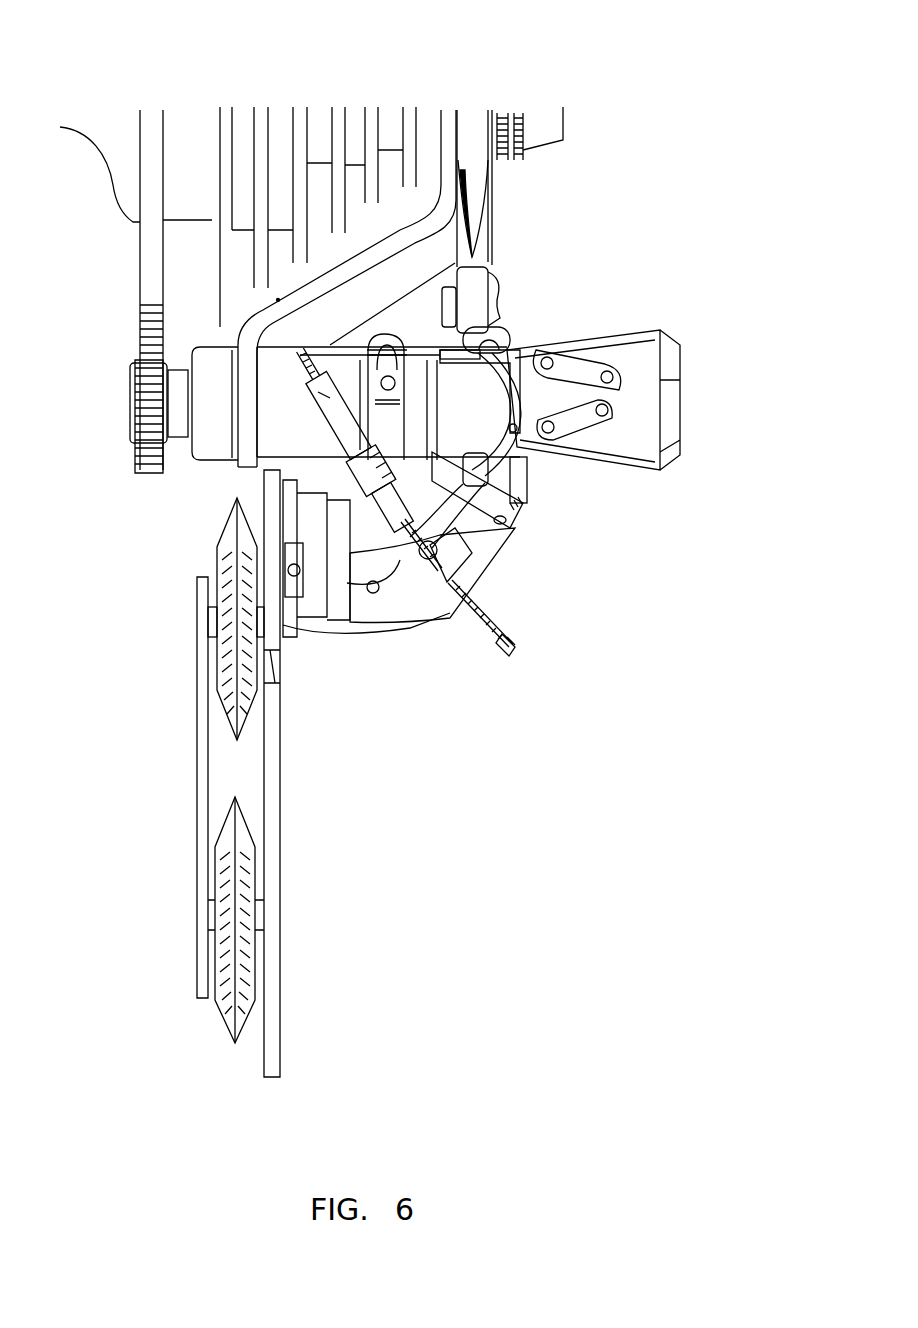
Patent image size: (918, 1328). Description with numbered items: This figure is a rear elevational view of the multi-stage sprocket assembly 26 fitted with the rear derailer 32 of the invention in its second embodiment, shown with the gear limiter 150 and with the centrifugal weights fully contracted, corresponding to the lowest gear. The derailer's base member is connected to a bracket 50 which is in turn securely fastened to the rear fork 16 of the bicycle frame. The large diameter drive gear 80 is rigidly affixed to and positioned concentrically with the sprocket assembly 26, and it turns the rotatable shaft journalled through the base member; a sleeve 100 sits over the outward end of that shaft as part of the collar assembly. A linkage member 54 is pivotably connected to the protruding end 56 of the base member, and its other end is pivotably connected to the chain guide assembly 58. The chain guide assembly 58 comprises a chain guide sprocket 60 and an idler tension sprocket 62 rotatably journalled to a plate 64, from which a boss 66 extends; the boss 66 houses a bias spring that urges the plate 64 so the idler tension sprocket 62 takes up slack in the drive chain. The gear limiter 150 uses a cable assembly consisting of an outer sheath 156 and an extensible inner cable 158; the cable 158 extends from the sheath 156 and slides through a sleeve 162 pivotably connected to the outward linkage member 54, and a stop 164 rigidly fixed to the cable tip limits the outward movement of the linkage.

The rear fork 16 is at (470, 203).
The multi-stage sprocket assembly 26 is at (665, 50).
The rear derailer 32 is at (790, 305).
The bracket 50 is at (347, 288).
The linkage member 54 is at (530, 480).
The protruding end 56 is at (443, 397).
The chain guide assembly 58 is at (322, 759).
The chain guide sprocket 60 is at (215, 622).
The idler tension sprocket 62 is at (223, 887).
The plate 64 is at (270, 822).
The boss 66 is at (338, 623).
The large diameter drive gear 80 is at (149, 245).
The sleeve 100 is at (497, 330).
The gear limiter 150 is at (552, 600).
The outer sheath 156 is at (313, 410).
The inner cable 158 is at (467, 590).
The sleeve 162 is at (443, 583).
The stop 164 is at (518, 645).